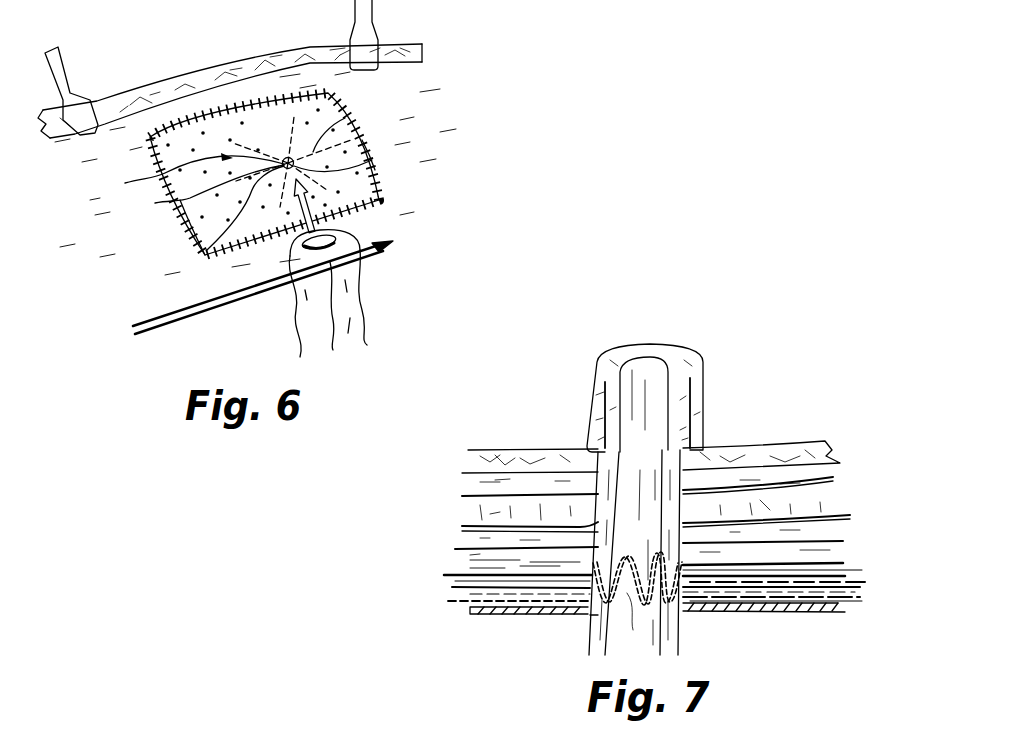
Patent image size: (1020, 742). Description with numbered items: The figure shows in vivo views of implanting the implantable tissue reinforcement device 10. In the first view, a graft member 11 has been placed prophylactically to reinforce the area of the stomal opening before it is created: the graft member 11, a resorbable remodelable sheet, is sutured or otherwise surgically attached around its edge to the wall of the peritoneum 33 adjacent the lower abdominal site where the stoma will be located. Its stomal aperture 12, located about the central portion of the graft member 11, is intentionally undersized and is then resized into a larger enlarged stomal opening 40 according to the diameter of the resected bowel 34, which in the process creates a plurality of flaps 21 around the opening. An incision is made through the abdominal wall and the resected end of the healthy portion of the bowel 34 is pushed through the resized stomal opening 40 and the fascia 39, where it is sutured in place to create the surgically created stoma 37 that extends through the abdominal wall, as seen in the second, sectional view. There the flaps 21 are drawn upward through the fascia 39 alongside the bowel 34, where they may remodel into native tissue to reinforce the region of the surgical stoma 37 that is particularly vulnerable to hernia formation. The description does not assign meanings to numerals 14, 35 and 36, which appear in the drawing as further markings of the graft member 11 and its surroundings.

In FIG. 6, the implantable tissue reinforcement device 10 is at (335, 179).
In FIG. 7, the implantable tissue reinforcement device 10 is at (612, 636).
In FIG. 6, the graft member 11 is at (435, 124).
In FIG. 7, the graft member 11 is at (523, 614).
In FIG. 6, the stomal aperture 12 is at (372, 158).
In FIG. 6, the corner of prosthesis 14 is at (205, 253).
In FIG. 6, the flaps 21 is at (251, 205).
In FIG. 7, the flaps 21 is at (655, 612).
In FIG. 6, the peritoneum 33 is at (373, 137).
In FIG. 6, the bowel 34 is at (297, 312).
In FIG. 7, the bowel 34 is at (681, 630).
In FIG. 6, the curved path line 35 is at (345, 118).
In FIG. 6, the central opening 36 is at (289, 124).
In FIG. 7, the surgically created stoma 37 is at (714, 416).
In FIG. 7, the fascia 39 is at (446, 563).
In FIG. 6, the enlarged stomal opening 40 is at (190, 176).
In FIG. 7, the enlarged stomal opening 40 is at (588, 614).